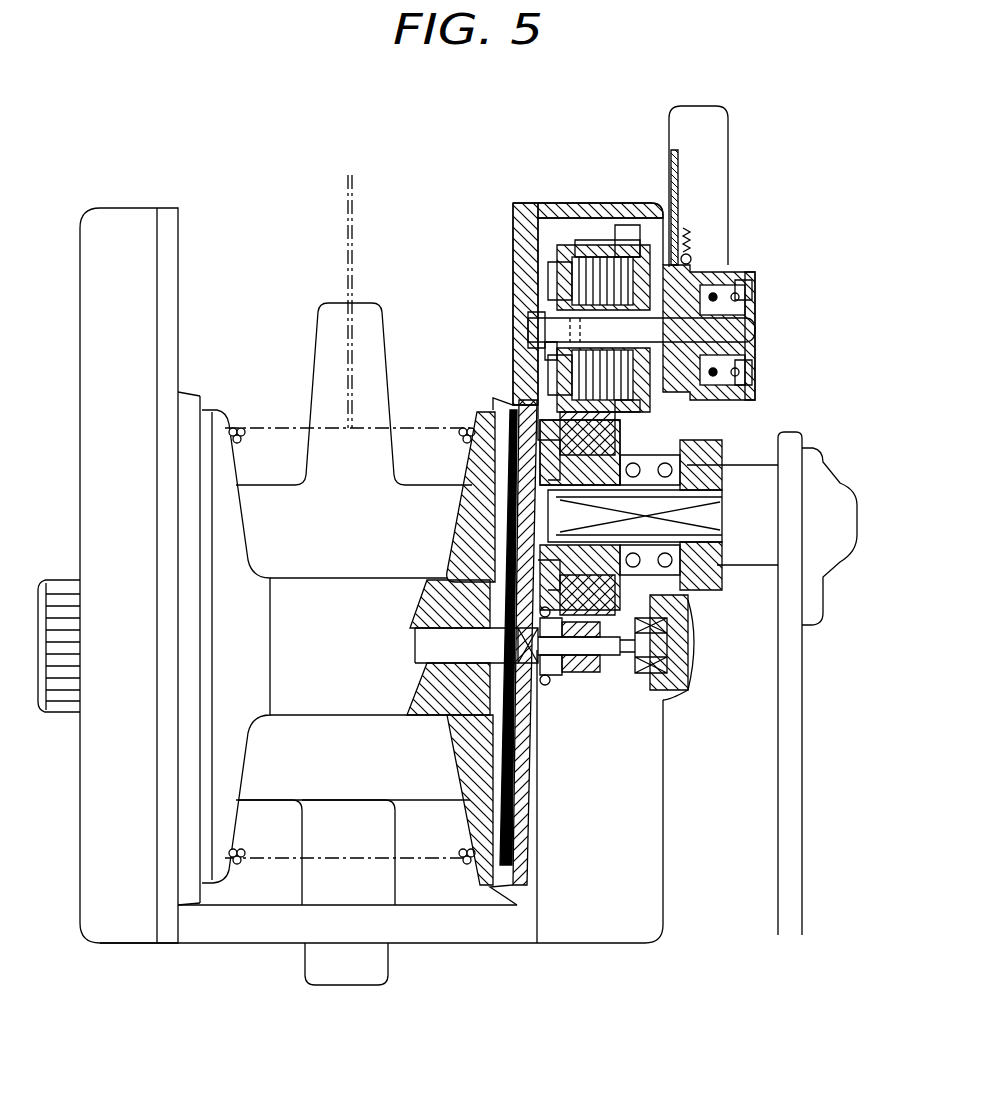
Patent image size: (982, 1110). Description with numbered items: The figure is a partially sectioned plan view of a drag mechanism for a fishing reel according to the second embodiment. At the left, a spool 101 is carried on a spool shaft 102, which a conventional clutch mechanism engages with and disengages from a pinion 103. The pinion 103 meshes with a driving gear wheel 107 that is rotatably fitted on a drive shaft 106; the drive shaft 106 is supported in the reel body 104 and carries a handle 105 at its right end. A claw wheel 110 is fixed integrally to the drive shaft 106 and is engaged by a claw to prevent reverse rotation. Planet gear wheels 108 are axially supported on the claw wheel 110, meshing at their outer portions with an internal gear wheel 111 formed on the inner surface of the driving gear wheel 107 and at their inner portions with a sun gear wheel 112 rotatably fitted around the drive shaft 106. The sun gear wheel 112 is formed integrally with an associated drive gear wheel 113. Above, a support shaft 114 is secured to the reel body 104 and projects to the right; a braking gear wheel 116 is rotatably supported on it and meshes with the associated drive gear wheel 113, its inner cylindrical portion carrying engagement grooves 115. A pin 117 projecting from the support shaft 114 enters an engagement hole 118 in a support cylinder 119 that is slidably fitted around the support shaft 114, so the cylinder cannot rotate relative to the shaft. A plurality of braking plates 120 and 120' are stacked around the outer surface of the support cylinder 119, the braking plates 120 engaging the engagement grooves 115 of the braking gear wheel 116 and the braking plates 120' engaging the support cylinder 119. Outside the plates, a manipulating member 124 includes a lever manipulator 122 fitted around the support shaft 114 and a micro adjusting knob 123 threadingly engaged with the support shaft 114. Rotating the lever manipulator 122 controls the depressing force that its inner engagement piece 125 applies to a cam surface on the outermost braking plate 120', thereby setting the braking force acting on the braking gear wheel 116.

The spool 101 is at (298, 592).
The spool shaft 102 is at (428, 632).
The pinion 103 is at (540, 680).
The reel body 104 is at (513, 216).
The handle 105 is at (778, 683).
The drive shaft 106 is at (707, 540).
The driving gear wheel 107 is at (585, 638).
The planet gear wheels 108 is at (573, 638).
The claw wheel 110 is at (553, 433).
The internal gear wheel 111 is at (680, 597).
The sun gear wheel 112 is at (605, 480).
The associated drive gear wheel 113 is at (700, 434).
The support shaft 114 is at (760, 328).
The engagement grooves 115 is at (607, 250).
The braking gear wheel 116 is at (637, 255).
The pin 117 is at (528, 322).
The engagement hole 118 is at (536, 350).
The support cylinder 119 is at (577, 250).
The braking plates 120 is at (594, 188).
The braking plates 120' is at (630, 271).
The lever manipulator 122 is at (760, 372).
The micro adjusting knob 123 is at (758, 300).
The manipulating member 124 is at (748, 258).
The inner engagement piece 125 is at (745, 292).